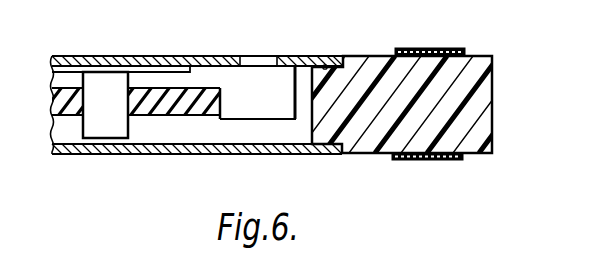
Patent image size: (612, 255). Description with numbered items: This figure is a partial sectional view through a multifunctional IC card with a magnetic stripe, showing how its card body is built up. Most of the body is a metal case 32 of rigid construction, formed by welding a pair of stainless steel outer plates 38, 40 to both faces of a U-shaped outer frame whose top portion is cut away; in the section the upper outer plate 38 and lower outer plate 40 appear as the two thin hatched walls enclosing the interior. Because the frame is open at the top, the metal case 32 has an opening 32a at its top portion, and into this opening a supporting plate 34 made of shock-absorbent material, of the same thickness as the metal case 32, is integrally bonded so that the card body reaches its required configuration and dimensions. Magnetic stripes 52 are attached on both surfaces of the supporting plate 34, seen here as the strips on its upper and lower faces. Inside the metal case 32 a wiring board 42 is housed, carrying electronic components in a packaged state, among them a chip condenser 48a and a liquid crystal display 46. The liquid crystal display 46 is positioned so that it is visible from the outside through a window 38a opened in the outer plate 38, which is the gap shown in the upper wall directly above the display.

The metal case 32 is at (113, 54).
The opening 32a is at (326, 64).
The supporting plate 34 is at (493, 98).
The outer plate 38 is at (185, 29).
The window 38a is at (248, 54).
The outer plate 40 is at (224, 150).
The wiring board 42 is at (162, 108).
The liquid crystal display 46 is at (272, 108).
The chip condenser 48a is at (109, 130).
The magnetic stripes 52 is at (438, 29).